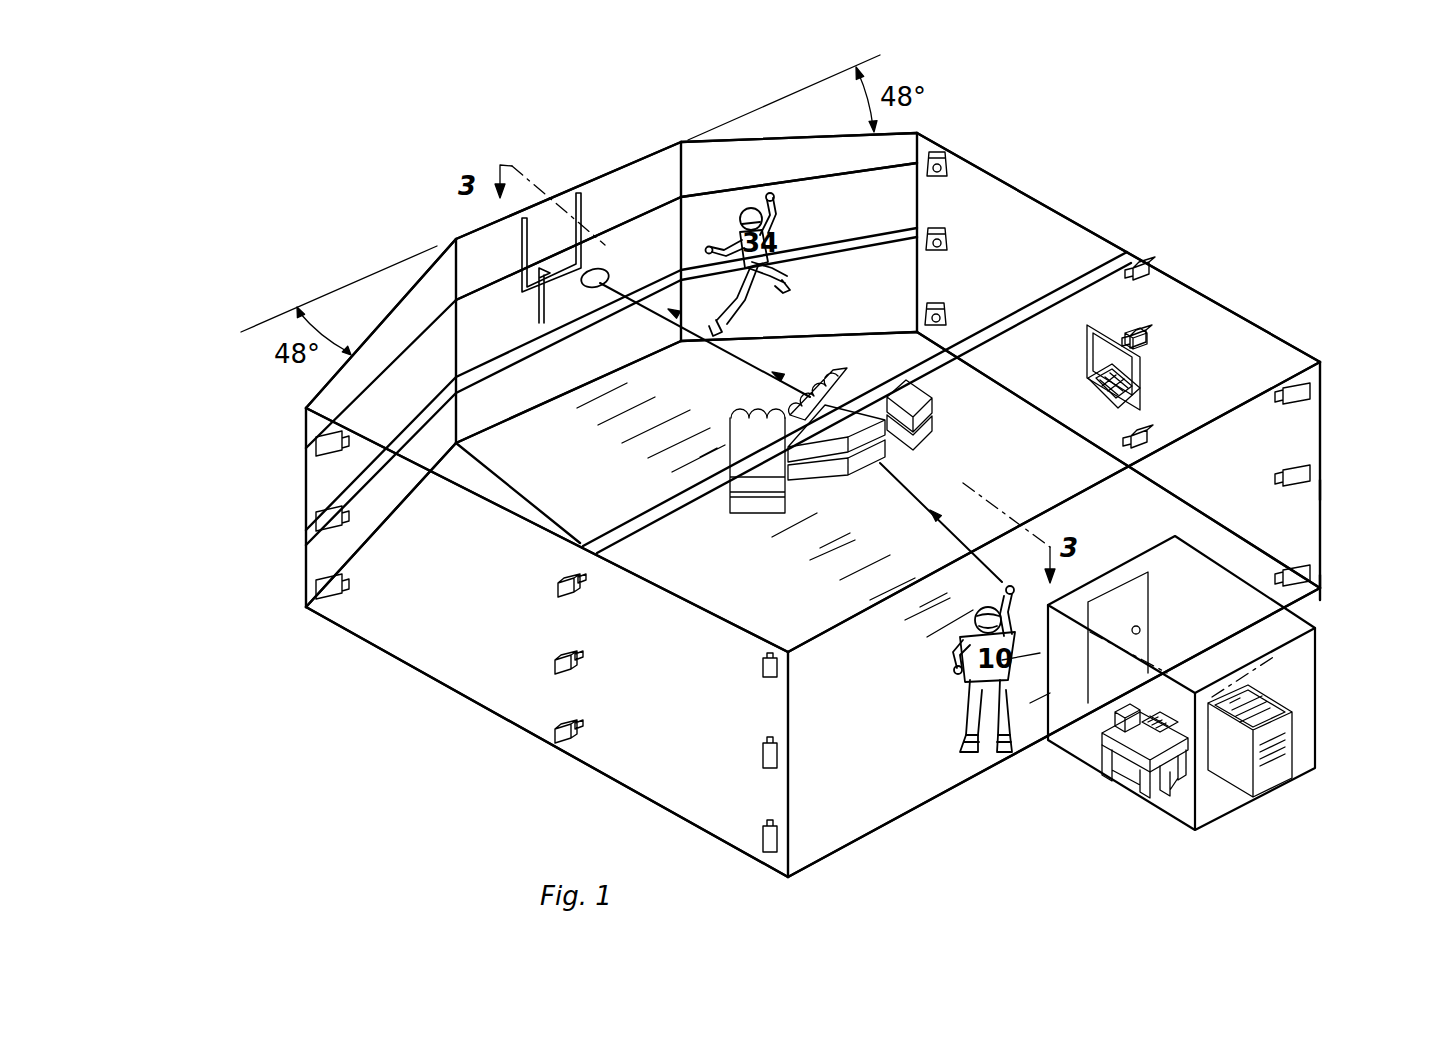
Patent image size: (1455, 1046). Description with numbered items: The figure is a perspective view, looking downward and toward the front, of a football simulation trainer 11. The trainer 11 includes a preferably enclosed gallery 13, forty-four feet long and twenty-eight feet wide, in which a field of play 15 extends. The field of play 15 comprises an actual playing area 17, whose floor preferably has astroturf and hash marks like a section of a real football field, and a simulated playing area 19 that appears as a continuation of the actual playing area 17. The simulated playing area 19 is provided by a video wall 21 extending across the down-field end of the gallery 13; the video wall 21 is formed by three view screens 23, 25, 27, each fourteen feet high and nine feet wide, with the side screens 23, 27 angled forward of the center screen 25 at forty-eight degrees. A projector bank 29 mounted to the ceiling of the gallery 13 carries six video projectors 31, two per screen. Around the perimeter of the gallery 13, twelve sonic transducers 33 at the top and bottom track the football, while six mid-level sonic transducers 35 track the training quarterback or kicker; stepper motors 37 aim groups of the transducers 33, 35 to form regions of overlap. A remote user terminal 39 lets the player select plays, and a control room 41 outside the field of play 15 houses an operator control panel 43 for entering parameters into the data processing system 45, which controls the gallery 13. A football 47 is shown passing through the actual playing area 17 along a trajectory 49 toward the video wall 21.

The football simulation trainer 11 is at (1172, 209).
The gallery 13 is at (1012, 224).
The field of play 15 is at (917, 740).
The actual playing area 17 is at (450, 625).
The simulated playing area 19 is at (497, 318).
The video wall 21 is at (466, 210).
The view screen 23 is at (345, 382).
The view screen 25 is at (660, 178).
The view screen 27 is at (890, 165).
The projector bank 29 is at (746, 513).
The video projectors 31 is at (914, 396).
The sonic transducers 33 is at (316, 442).
The sonic transducers 35 is at (316, 517).
The stepper motors 37 is at (1300, 487).
The remote user terminal 39 is at (1145, 378).
The control room 41 is at (1318, 743).
The operator control panel 43 is at (1128, 755).
The data processing system 45 is at (1268, 735).
The football 47 is at (593, 288).
The trajectory 49 is at (770, 372).